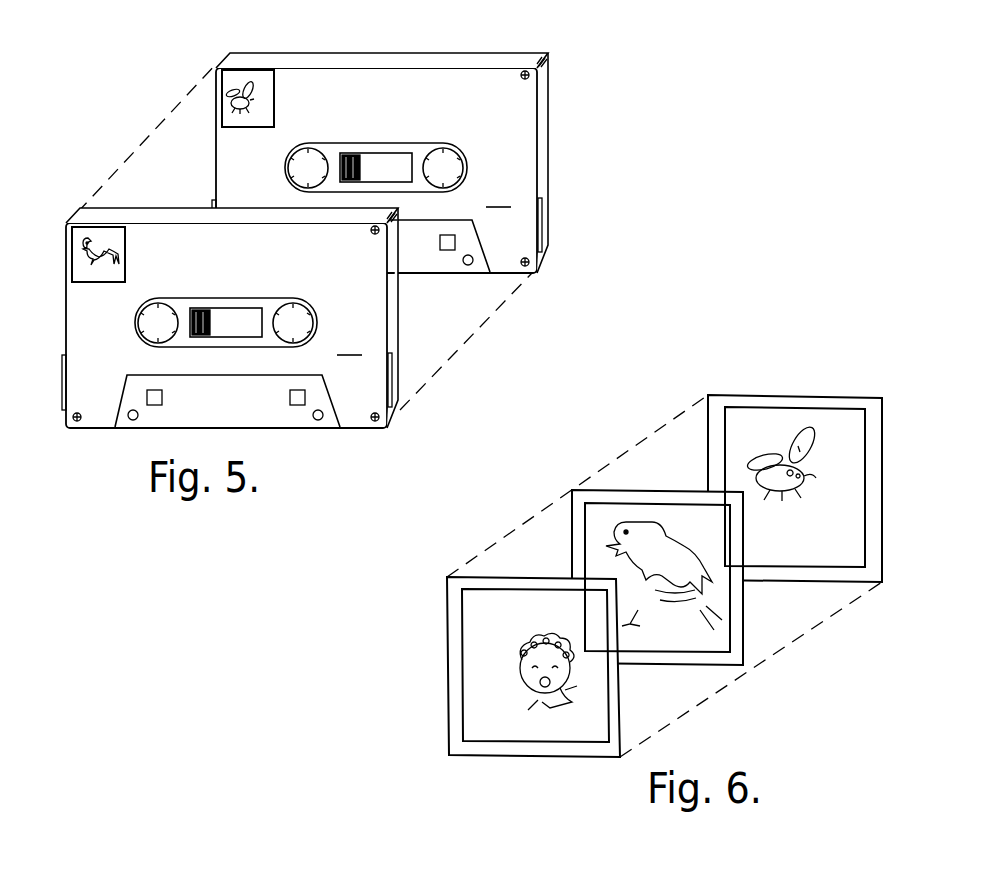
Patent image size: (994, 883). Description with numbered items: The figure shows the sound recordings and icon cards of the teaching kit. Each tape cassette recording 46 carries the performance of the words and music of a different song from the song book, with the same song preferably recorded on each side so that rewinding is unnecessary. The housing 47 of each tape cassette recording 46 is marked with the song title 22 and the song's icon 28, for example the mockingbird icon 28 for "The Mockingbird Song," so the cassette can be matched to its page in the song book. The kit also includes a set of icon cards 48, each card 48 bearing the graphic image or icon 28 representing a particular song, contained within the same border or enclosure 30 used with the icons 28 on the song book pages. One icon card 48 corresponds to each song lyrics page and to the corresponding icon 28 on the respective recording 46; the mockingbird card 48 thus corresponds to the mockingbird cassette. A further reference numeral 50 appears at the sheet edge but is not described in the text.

In FIG. 5, the song title 22 is at (282, 262).
In FIG. 5, the icon 28 is at (255, 85).
In FIG. 6, the icon 28 is at (633, 523).
In FIG. 5, the border or enclosure 30 is at (213, 151).
In FIG. 6, the border or enclosure 30 is at (815, 568).
In FIG. 5, the tape cassette recording 46 is at (547, 170).
In FIG. 5, the housing 47 is at (425, 268).
In FIG. 6, the icon card 48 is at (828, 395).
In FIG. 6, the reference 50 is at (310, 876).